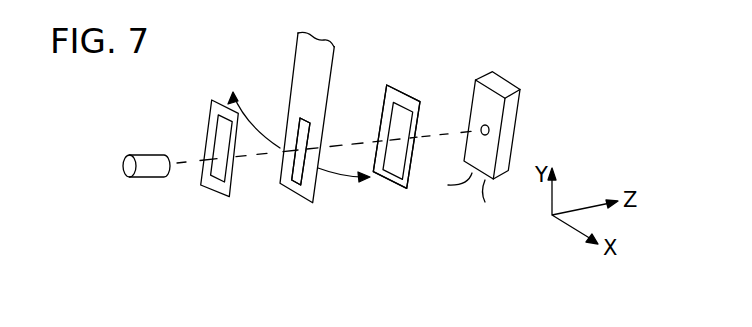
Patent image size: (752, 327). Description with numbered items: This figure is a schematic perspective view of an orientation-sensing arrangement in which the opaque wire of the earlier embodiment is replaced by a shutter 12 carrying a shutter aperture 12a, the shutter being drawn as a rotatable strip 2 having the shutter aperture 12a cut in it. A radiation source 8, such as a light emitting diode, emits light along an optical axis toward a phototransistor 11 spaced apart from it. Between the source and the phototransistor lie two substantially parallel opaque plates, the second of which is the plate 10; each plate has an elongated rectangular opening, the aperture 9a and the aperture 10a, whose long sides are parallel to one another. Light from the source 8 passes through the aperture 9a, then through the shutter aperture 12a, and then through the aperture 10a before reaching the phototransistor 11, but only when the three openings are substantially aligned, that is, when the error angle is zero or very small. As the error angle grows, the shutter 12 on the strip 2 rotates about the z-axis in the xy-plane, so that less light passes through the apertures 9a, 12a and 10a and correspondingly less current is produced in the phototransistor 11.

The strip 2 is at (322, 77).
The radiation source 8 is at (150, 163).
The aperture 9a is at (215, 184).
The plate 10 is at (395, 177).
The aperture 10a is at (387, 85).
The phototransistor 11 is at (507, 143).
The shutter 12 is at (310, 182).
The shutter aperture 12a is at (300, 162).